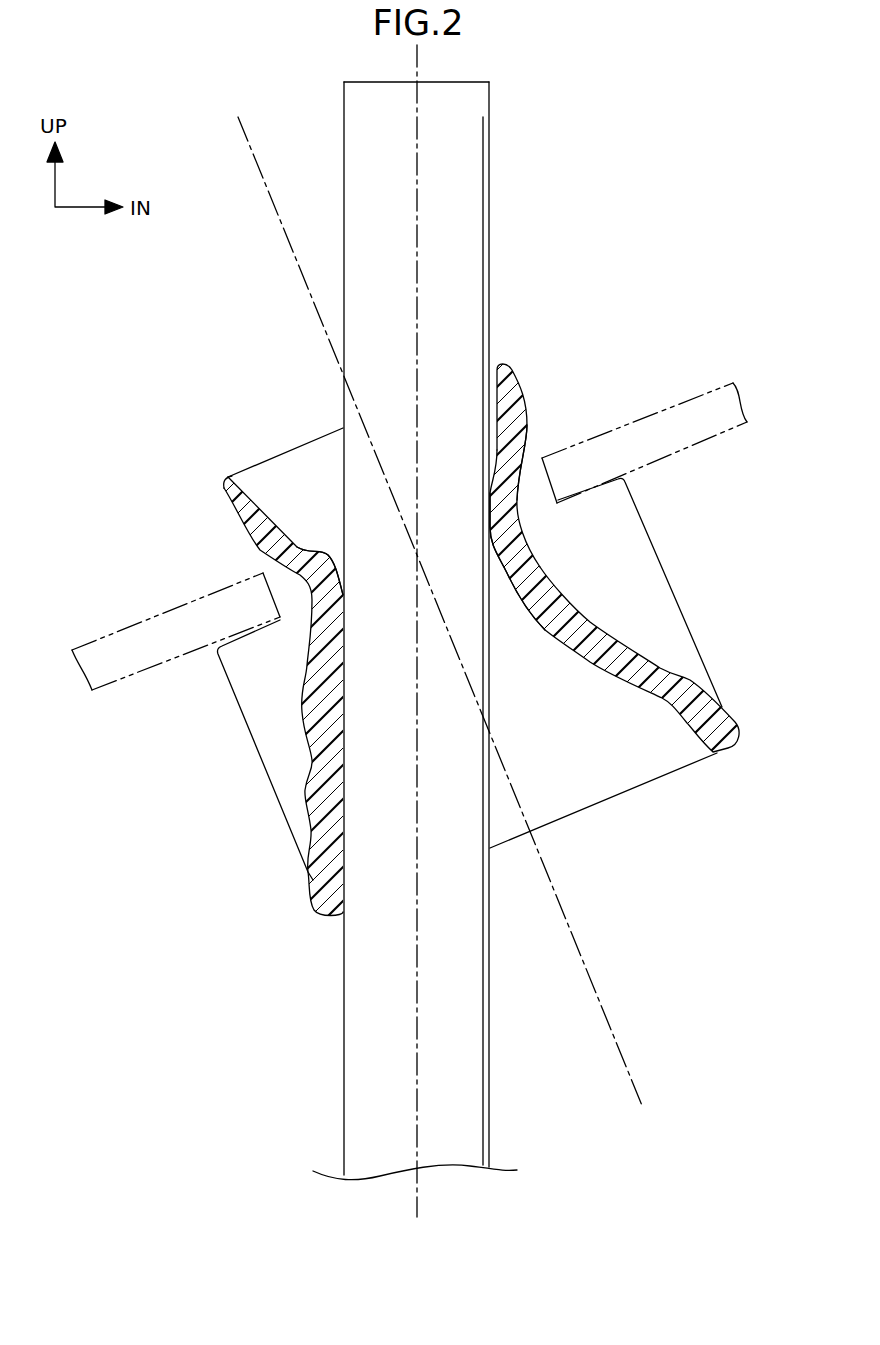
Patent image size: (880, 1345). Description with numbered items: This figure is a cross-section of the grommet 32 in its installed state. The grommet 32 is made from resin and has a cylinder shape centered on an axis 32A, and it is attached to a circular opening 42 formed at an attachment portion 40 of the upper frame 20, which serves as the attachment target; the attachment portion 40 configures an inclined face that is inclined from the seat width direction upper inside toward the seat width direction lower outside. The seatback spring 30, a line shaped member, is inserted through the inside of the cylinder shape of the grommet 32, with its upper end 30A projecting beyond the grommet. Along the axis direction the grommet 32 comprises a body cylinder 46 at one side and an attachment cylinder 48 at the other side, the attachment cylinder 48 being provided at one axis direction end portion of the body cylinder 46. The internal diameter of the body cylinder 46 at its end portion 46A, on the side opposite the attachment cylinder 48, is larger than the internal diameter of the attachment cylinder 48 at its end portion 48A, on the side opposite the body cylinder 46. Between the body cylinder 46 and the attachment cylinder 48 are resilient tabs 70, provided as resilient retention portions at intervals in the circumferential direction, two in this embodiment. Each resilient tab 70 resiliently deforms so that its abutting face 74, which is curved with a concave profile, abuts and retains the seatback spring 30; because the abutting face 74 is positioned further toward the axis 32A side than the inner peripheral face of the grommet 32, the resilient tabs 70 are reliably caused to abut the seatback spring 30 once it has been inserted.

The upper frame 20 is at (644, 410).
The seatback spring 30 is at (492, 108).
The upper end of rod 30A is at (453, 82).
The grommet 32 is at (528, 373).
The axis 32A is at (262, 176).
The attachment portion 40 is at (683, 402).
The circular opening 42 is at (533, 452).
The body cylinder 46 is at (606, 676).
The end portion 46A is at (613, 800).
The attachment cylinder 48 is at (261, 438).
The end portion 48A is at (238, 470).
The resilient tab 70 is at (440, 600).
The abutting face 74 is at (345, 645).